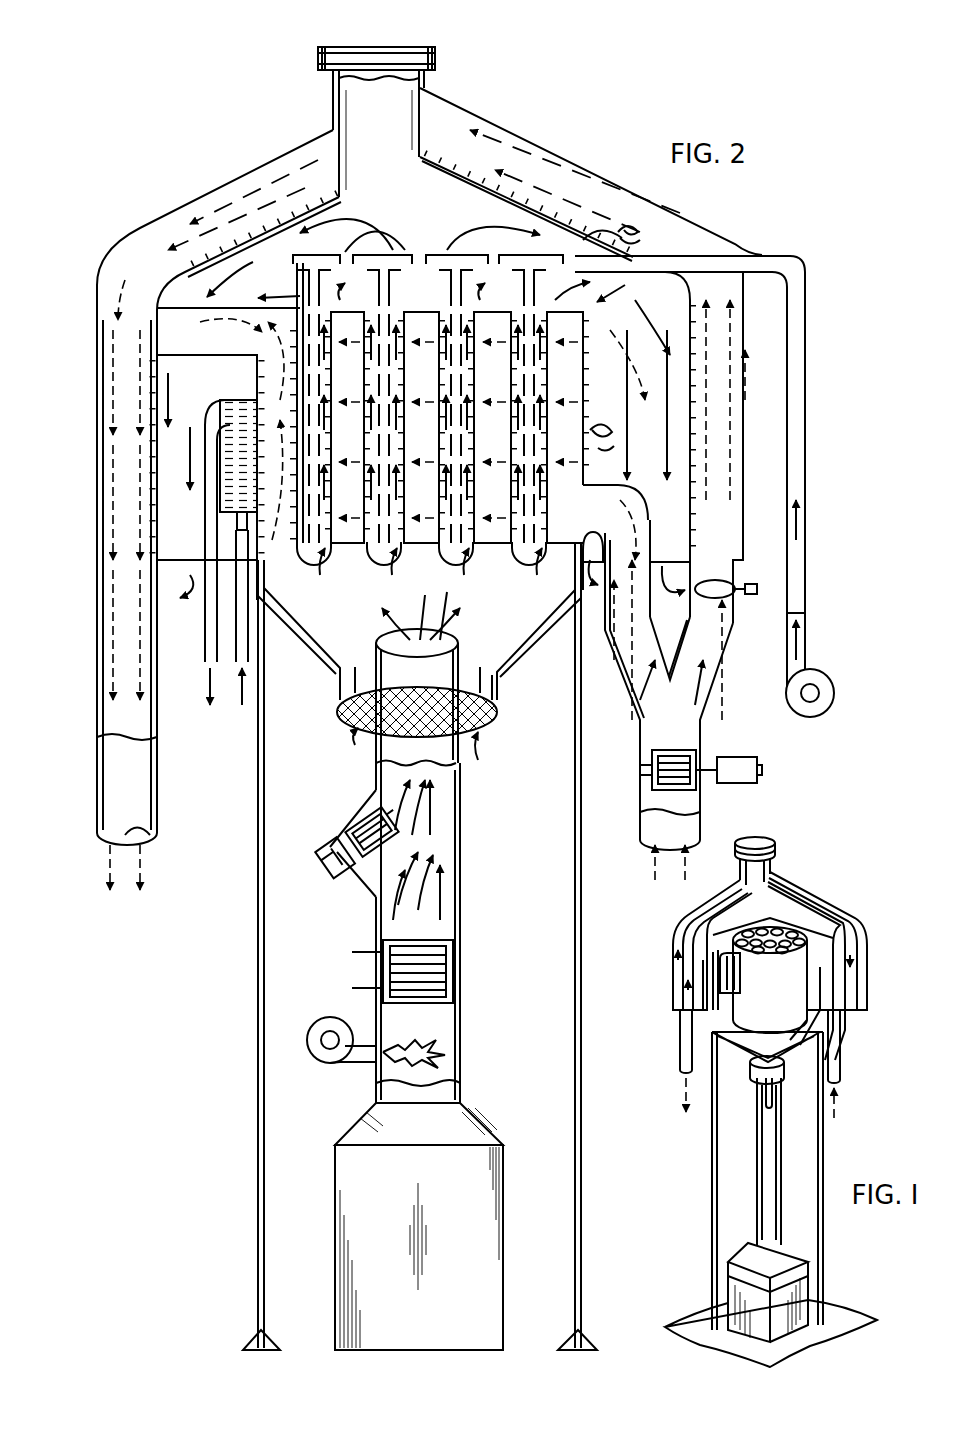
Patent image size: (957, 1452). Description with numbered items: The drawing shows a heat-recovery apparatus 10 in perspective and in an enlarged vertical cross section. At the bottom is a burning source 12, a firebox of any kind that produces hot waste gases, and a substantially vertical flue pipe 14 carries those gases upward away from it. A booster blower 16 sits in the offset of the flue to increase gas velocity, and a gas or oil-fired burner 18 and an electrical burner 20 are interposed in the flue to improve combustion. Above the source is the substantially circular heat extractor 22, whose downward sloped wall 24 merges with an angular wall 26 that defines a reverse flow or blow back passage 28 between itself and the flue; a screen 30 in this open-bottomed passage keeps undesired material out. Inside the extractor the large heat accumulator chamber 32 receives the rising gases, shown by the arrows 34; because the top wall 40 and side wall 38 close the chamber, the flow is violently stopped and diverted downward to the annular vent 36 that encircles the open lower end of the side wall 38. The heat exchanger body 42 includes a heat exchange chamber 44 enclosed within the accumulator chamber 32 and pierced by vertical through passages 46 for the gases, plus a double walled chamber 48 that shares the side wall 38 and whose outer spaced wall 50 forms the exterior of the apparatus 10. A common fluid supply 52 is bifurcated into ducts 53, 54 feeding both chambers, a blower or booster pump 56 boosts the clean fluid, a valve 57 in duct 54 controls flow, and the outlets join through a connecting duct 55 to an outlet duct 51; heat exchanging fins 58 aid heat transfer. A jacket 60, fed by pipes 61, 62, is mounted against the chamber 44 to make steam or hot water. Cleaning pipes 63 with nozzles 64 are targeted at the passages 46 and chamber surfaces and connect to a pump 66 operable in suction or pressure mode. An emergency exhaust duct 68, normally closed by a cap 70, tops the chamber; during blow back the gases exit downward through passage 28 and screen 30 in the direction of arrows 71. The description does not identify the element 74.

In FIG. 2, the apparatus 10 is at (840, 258).
In FIG. 1, the apparatus 10 is at (875, 878).
In FIG. 2, the burning source 12 is at (368, 1333).
In FIG. 1, the burning source 12 is at (748, 1330).
In FIG. 2, the flue pipe 14 is at (460, 884).
In FIG. 1, the flue pipe 14 is at (781, 1160).
In FIG. 2, the booster blower 16 is at (350, 852).
In FIG. 2, the gas or oil-fired burner 18 is at (335, 1062).
In FIG. 2, the electrical burner 20 is at (453, 942).
In FIG. 2, the heat extractor 22 is at (285, 712).
In FIG. 1, the heat extractor 22 is at (728, 1070).
In FIG. 2, the downward sloped wall 24 is at (330, 663).
In FIG. 1, the downward sloped wall 24 is at (782, 1065).
In FIG. 2, the angular wall 26 is at (497, 700).
In FIG. 1, the angular wall 26 is at (748, 1072).
In FIG. 2, the reverse flow or blow back passage 28 is at (497, 680).
In FIG. 2, the screen or grid-type member 30 is at (487, 722).
In FIG. 2, the heat accumulator chamber 32 is at (690, 398).
In FIG. 1, the heat accumulator chamber 32 is at (800, 912).
In FIG. 2, the arrows 34 is at (372, 225).
In FIG. 2, the annular vent 36 is at (422, 570).
In FIG. 1, the annular vent 36 is at (733, 1012).
In FIG. 2, the side wall 38 is at (160, 510).
In FIG. 1, the side wall 38 is at (683, 990).
In FIG. 2, the top wall 40 is at (255, 232).
In FIG. 1, the top wall 40 is at (780, 903).
In FIG. 2, the heat exchanger body 42 is at (513, 409).
In FIG. 2, the heat exchange chamber 44 is at (605, 365).
In FIG. 1, the heat exchange chamber 44 is at (862, 945).
In FIG. 2, the through passages 46 is at (429, 409).
In FIG. 1, the through passages 46 is at (764, 962).
In FIG. 2, the double walled chamber 48 is at (452, 120).
In FIG. 1, the double walled chamber 48 is at (675, 945).
In FIG. 2, the spaced wall 50 is at (97, 305).
In FIG. 1, the spaced wall 50 is at (673, 920).
In FIG. 2, the outlet duct 51 is at (103, 803).
In FIG. 1, the outlet duct 51 is at (679, 1050).
In FIG. 2, the common fluid supply 52 is at (700, 800).
In FIG. 1, the common fluid supply 52 is at (842, 1070).
In FIG. 2, the duct 53 is at (625, 660).
In FIG. 1, the duct 53 is at (805, 1025).
In FIG. 2, the duct 54 is at (725, 648).
In FIG. 1, the duct 54 is at (850, 1023).
In FIG. 2, the connecting duct 55 is at (192, 352).
In FIG. 1, the connecting duct 55 is at (713, 910).
In FIG. 2, the blower or booster pump 56 is at (690, 760).
In FIG. 2, the valve 57 is at (715, 582).
In FIG. 2, the heat exchanging fins 58 is at (628, 334).
In FIG. 2, the jacket 60 is at (232, 402).
In FIG. 1, the jacket 60 is at (740, 985).
In FIG. 2, the pipe 61 is at (203, 652).
In FIG. 2, the pipe 62 is at (228, 675).
In FIG. 2, the pipes 63 is at (460, 262).
In FIG. 2, the nozzles 64 is at (414, 255).
In FIG. 2, the pump 66 is at (832, 680).
In FIG. 2, the emergency exhaust duct 68 is at (332, 104).
In FIG. 1, the emergency exhaust duct 68 is at (772, 860).
In FIG. 2, the cap or cover 70 is at (438, 57).
In FIG. 1, the cap or cover 70 is at (760, 843).
In FIG. 2, the arrows 71 is at (352, 740).
In FIG. 2, the support leg 74 is at (575, 1030).
In FIG. 1, the support leg 74 is at (712, 1220).